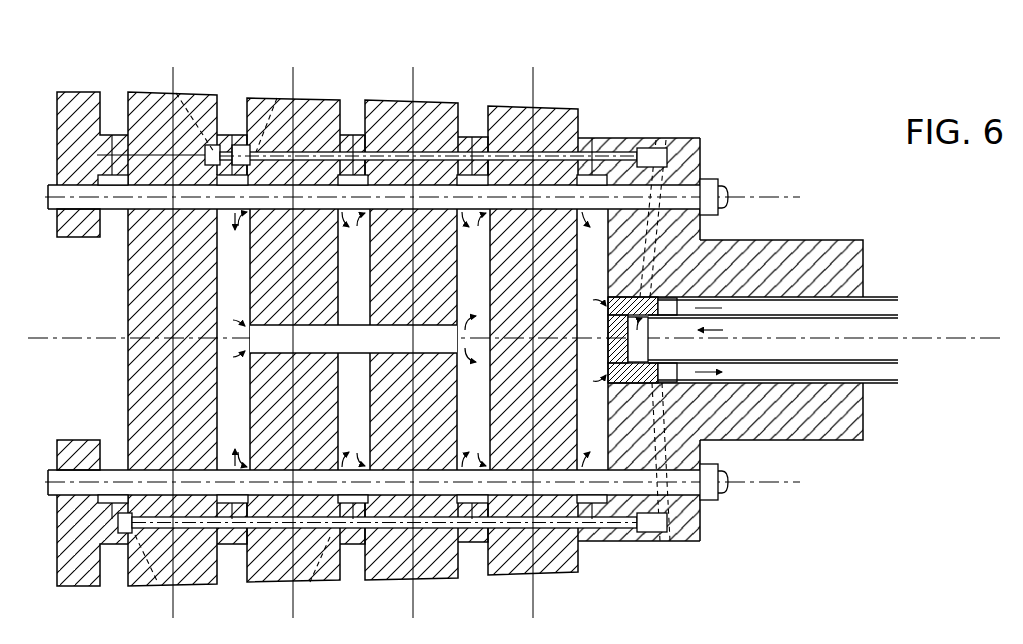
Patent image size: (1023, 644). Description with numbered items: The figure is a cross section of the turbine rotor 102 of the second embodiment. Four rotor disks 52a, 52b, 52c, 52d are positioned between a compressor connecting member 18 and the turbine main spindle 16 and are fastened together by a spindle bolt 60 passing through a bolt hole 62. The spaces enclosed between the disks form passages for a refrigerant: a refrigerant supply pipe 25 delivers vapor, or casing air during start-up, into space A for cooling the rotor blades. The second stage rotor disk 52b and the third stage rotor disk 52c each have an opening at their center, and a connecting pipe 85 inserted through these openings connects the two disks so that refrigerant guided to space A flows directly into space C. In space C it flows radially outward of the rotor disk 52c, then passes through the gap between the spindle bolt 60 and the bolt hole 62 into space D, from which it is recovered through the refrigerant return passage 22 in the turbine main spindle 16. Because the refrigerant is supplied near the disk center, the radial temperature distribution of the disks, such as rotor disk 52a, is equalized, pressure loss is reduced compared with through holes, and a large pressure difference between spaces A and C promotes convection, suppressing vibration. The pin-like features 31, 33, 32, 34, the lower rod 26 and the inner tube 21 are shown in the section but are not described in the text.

The compressor connecting member 18 is at (74, 92).
The rotor disk 52a is at (148, 92).
The second stage rotor disk 52b is at (312, 98).
The third stage rotor disk 52c is at (392, 100).
The rotor disk 52d is at (503, 106).
The pin 31 is at (193, 97).
The pin 33 is at (274, 100).
The pin 32 is at (140, 588).
The pin 34 is at (331, 587).
The refrigerant supply pipe 25 is at (543, 151).
The lower tie rod 26 is at (613, 533).
The bolt hole 62 is at (579, 137).
The spindle bolt 60 is at (678, 178).
The turbine main spindle 16 is at (829, 250).
The refrigerant return passage 22 is at (868, 307).
The inner tube 21 is at (888, 330).
The connecting pipe 85 is at (275, 357).
The turbine rotor 102 is at (514, 330).